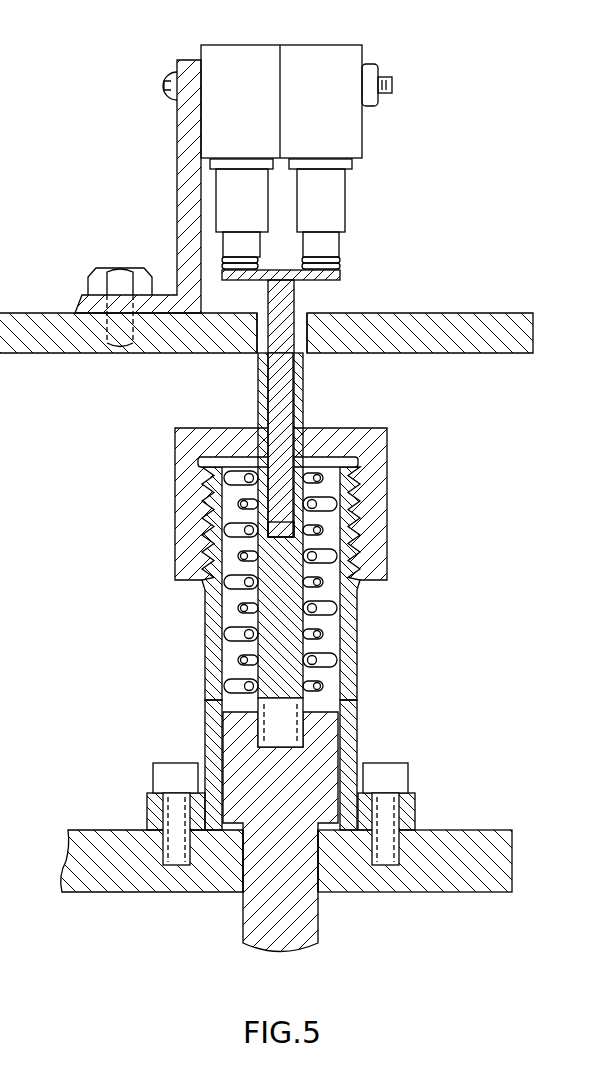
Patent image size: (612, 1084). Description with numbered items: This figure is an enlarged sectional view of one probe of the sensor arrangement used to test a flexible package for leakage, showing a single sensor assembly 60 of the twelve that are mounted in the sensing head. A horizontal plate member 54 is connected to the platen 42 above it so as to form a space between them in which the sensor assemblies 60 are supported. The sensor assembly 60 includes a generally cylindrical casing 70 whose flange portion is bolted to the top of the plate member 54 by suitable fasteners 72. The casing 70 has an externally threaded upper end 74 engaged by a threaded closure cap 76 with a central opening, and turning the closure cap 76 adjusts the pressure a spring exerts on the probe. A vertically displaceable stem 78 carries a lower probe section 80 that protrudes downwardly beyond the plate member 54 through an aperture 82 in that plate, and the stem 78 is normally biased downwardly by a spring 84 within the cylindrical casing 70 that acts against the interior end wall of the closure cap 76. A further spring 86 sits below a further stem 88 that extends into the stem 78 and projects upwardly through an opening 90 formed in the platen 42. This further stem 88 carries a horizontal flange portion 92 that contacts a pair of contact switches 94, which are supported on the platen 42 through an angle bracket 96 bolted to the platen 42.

The platen 42 is at (521, 313).
The horizontal plate member 54 is at (498, 830).
The sensor assembly 60 is at (398, 617).
The cylindrical casing 70 is at (357, 702).
The fasteners 72 is at (408, 778).
The externally threaded upper end 74 is at (353, 496).
The threaded closure cap 76 is at (357, 428).
The vertically displaceable stem 78 is at (303, 530).
The lower probe section 80 is at (317, 930).
The aperture 82 is at (240, 872).
The spring 84 is at (224, 606).
The spring 86 is at (293, 449).
The further stem 88 is at (276, 383).
The opening 90 is at (307, 328).
The horizontal flange portion 92 is at (340, 273).
The contact switches 94 is at (345, 200).
The angle bracket 96 is at (177, 183).